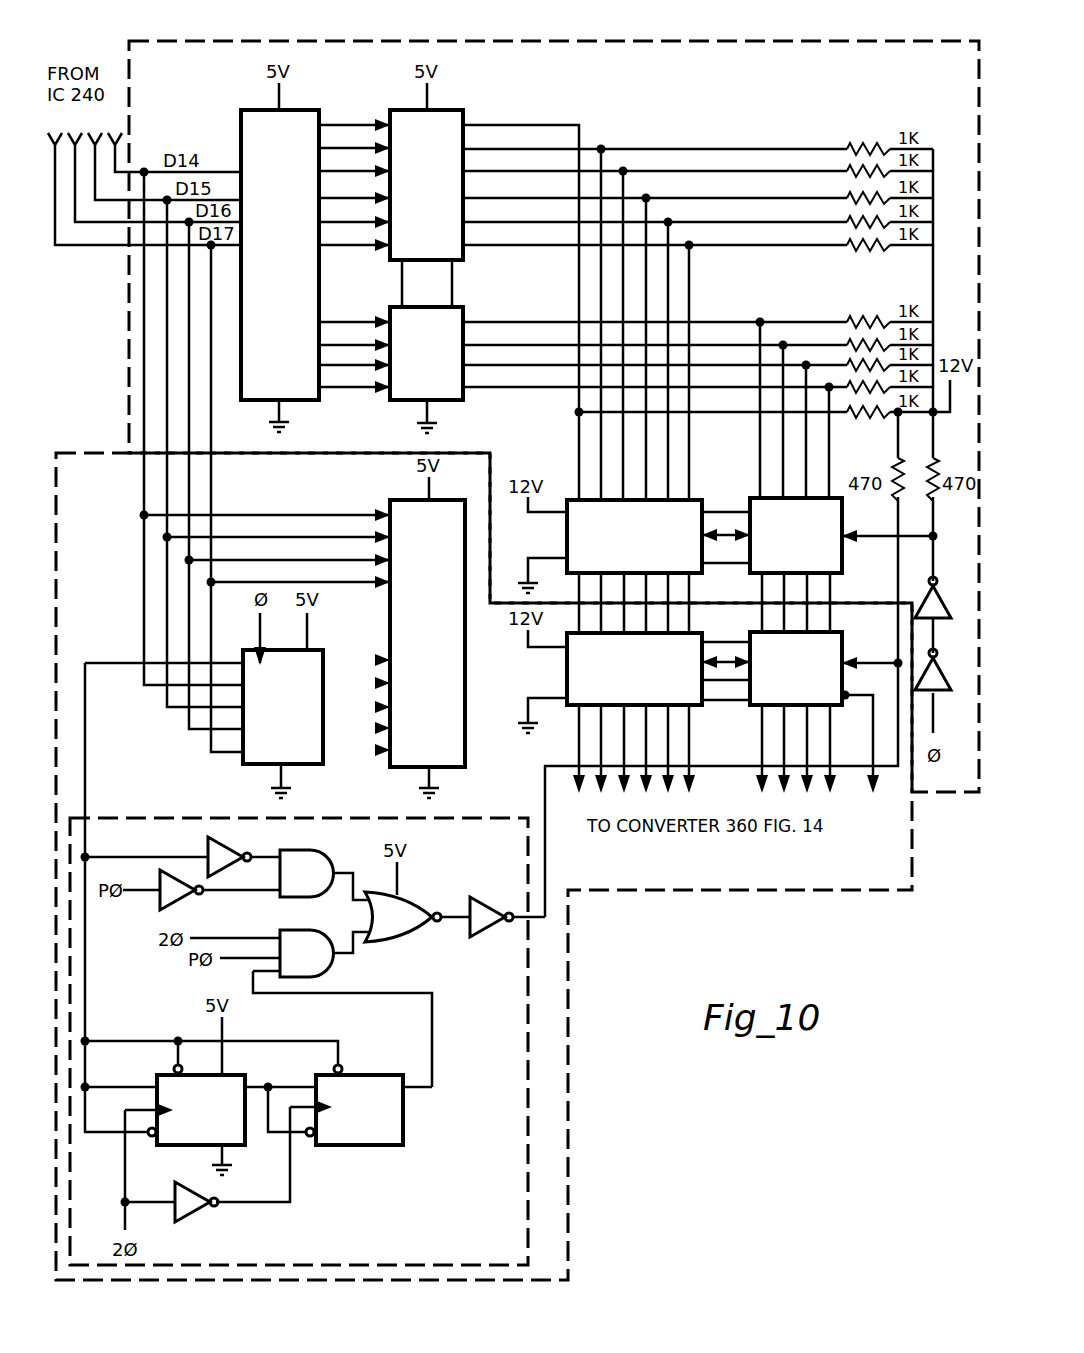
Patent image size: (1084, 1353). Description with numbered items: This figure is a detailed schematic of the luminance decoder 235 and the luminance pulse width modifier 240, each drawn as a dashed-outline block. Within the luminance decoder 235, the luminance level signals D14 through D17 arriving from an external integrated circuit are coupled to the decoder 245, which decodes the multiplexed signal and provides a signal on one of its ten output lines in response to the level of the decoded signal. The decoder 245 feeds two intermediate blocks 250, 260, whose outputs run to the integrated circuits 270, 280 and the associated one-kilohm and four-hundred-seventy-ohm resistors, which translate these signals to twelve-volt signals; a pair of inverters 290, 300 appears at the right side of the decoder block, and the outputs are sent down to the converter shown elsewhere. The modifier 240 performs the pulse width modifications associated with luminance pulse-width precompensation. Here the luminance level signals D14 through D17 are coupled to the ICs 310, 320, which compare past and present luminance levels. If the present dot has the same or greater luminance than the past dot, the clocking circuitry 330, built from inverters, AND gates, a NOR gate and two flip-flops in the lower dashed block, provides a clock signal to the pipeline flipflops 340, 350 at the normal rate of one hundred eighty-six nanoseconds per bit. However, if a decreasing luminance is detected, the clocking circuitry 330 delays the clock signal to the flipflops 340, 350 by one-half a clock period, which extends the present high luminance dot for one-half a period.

The luminance decoder 235 is at (583, 39).
The luminance pulse width modifier 240 is at (568, 1150).
The decoder 245 is at (300, 256).
The latch 250 is at (448, 193).
The latch 260 is at (448, 363).
The integrated circuit 270 is at (655, 550).
The integrated circuit 280 is at (817, 550).
The inverter 290 is at (948, 598).
The inverter 300 is at (940, 662).
The IC 310 is at (305, 718).
The IC 320 is at (448, 648).
The clocking circuitry 330 is at (352, 1263).
The pipeline flipflop 340 is at (655, 682).
The pipeline flipflop 350 is at (817, 682).